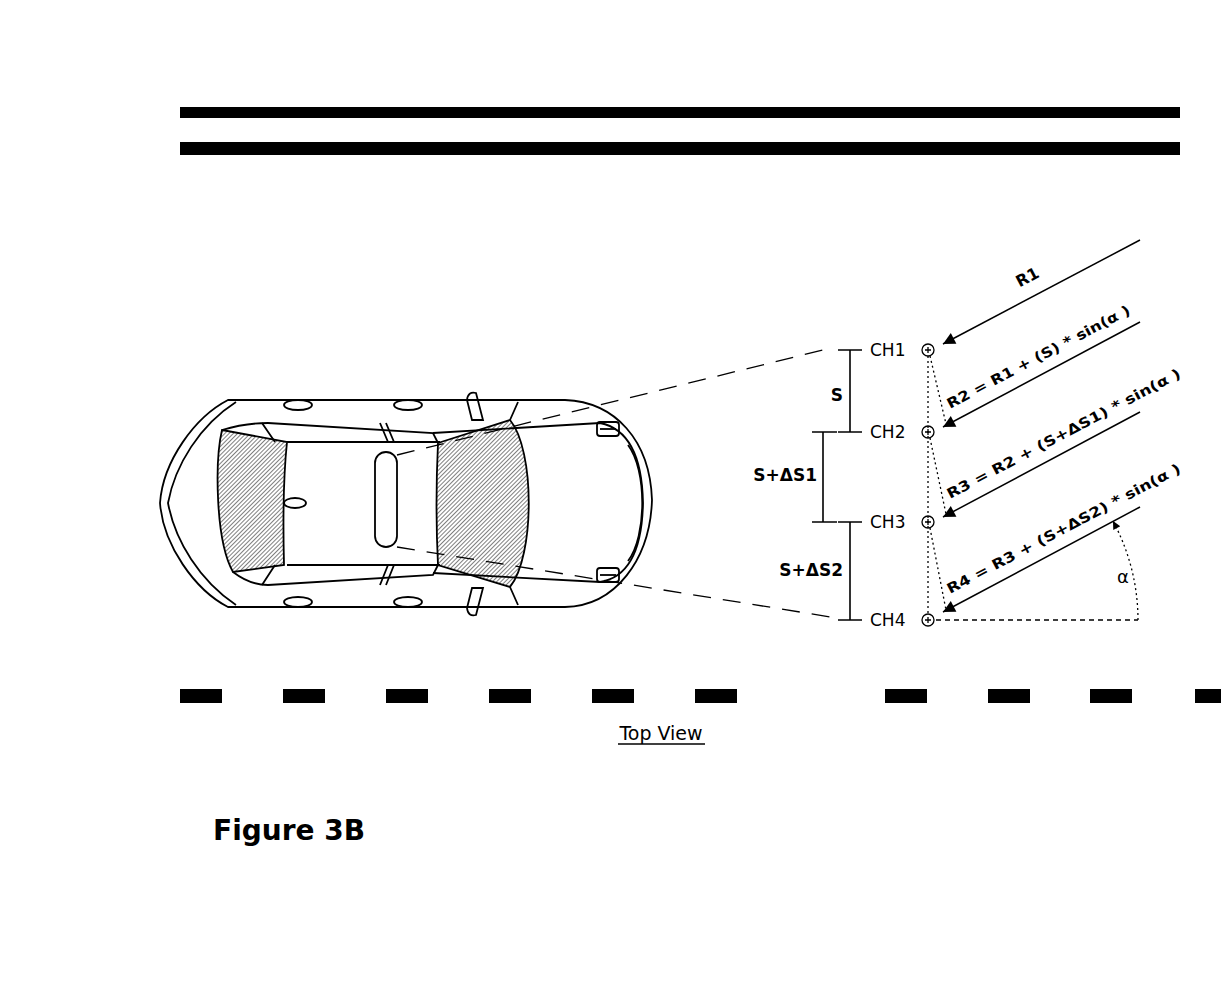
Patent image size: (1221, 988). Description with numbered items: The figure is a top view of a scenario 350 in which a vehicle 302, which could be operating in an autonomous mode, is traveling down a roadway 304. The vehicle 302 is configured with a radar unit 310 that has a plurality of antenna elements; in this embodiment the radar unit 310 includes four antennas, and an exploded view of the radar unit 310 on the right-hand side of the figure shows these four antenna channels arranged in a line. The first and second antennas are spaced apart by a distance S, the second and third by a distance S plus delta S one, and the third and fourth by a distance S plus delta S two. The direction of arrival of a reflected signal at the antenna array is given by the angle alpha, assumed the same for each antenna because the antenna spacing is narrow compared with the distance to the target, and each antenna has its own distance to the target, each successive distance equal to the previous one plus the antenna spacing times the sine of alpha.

The scenario 350 is at (434, 71).
The roadway 304 is at (597, 166).
The vehicle 302 is at (568, 406).
The radar unit 310 is at (378, 468).